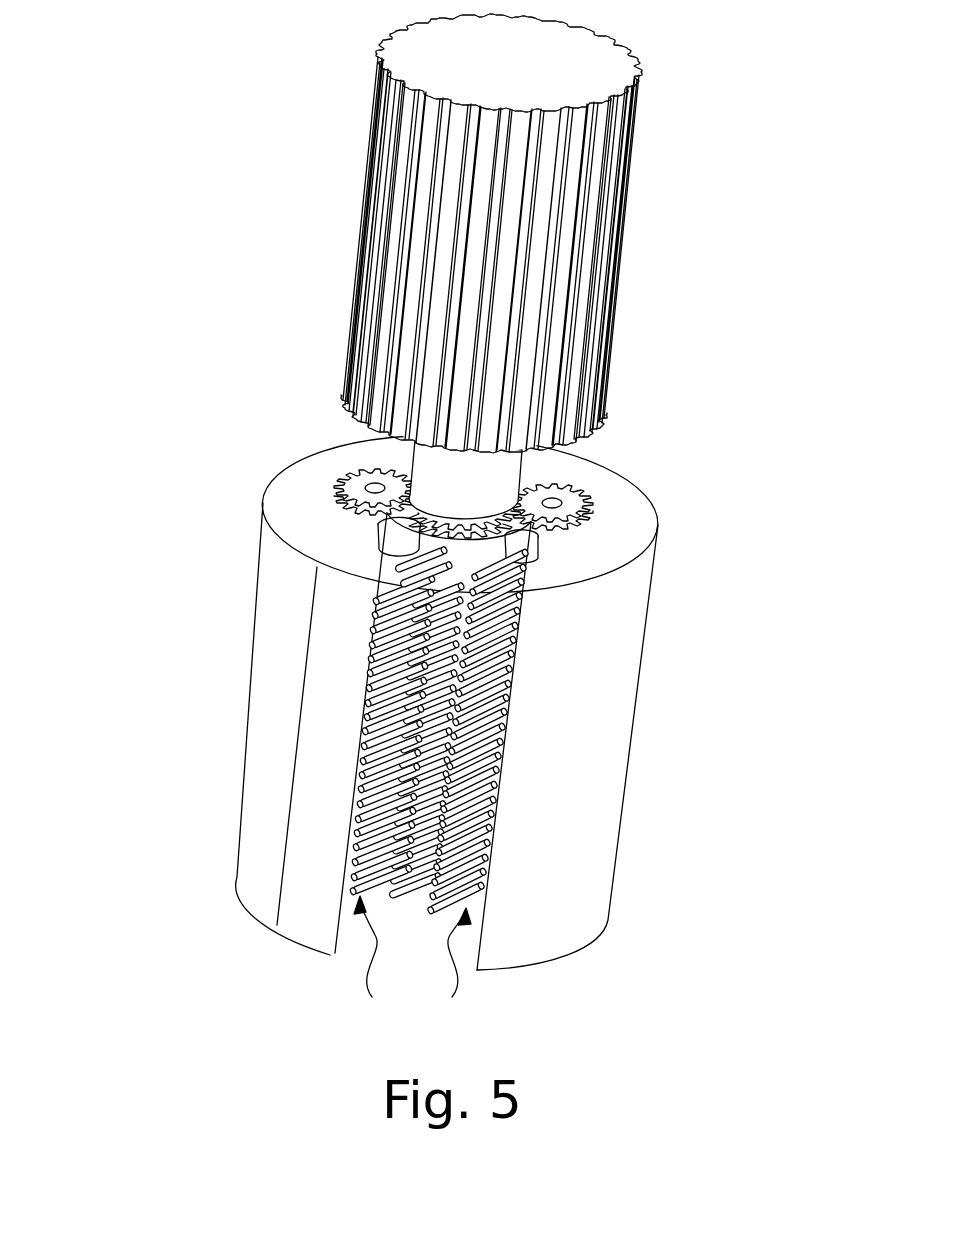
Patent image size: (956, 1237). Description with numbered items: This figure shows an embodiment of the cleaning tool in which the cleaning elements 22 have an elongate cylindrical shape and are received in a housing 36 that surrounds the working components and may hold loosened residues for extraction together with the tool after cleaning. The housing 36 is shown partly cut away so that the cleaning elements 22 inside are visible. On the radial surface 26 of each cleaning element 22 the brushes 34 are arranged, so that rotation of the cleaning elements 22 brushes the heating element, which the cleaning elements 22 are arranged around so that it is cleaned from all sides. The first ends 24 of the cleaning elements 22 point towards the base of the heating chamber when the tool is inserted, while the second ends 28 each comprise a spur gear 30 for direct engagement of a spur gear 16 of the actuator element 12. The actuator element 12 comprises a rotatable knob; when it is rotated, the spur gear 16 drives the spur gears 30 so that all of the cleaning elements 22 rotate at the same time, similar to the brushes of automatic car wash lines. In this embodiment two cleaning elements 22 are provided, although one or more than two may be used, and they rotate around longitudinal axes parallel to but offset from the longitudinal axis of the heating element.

The actuator element 12 is at (563, 174).
The spur gear 16 is at (457, 517).
The cleaning element 22 is at (380, 694).
The first end 24 is at (412, 970).
The radial surface 26 is at (509, 671).
The second end 28 is at (390, 545).
The spur gear 30 is at (357, 469).
The brush 34 is at (438, 730).
The housing 36 is at (570, 851).